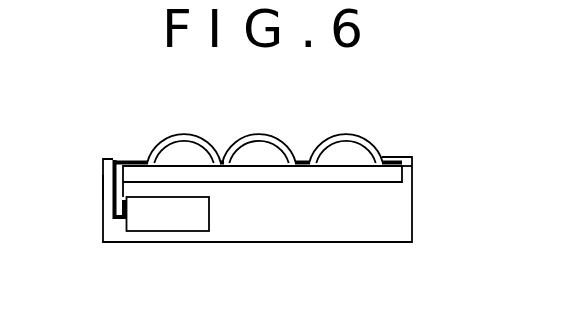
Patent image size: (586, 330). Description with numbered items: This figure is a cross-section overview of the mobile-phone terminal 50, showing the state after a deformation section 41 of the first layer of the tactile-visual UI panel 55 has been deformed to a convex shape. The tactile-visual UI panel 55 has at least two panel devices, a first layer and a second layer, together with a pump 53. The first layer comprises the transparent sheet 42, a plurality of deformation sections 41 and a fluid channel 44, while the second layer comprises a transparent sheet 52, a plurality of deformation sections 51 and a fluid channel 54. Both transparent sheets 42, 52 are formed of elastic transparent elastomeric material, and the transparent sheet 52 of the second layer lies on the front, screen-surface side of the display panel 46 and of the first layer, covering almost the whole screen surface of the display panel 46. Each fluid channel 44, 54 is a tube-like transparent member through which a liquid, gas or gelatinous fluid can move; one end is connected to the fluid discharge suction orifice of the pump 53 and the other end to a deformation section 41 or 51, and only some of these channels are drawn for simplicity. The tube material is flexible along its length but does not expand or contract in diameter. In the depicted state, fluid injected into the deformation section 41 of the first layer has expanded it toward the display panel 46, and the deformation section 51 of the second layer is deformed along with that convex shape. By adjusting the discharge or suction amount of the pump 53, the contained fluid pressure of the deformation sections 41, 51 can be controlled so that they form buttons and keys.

The mobile-phone terminal 50 is at (101, 137).
The fluid channel 44 is at (113, 188).
The fluid channel 54 is at (133, 157).
The transparent sheet 42 is at (414, 158).
The display panel 46 is at (414, 176).
The deformation section 51 is at (183, 134).
The deformation section 41 is at (338, 148).
The tactile-visual UI panel 55 is at (351, 128).
The transparent sheet 52 is at (388, 156).
The pump 53 is at (163, 231).